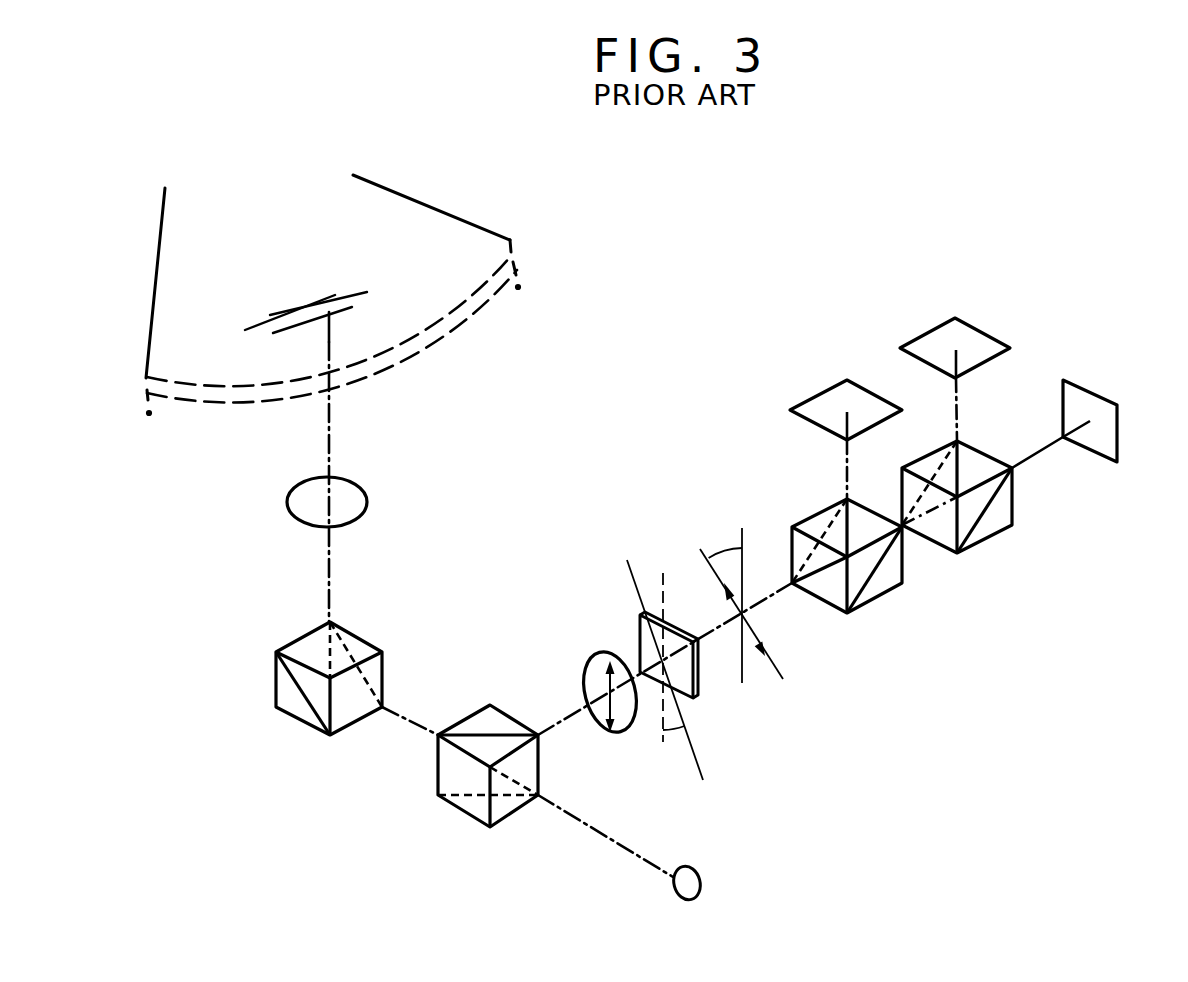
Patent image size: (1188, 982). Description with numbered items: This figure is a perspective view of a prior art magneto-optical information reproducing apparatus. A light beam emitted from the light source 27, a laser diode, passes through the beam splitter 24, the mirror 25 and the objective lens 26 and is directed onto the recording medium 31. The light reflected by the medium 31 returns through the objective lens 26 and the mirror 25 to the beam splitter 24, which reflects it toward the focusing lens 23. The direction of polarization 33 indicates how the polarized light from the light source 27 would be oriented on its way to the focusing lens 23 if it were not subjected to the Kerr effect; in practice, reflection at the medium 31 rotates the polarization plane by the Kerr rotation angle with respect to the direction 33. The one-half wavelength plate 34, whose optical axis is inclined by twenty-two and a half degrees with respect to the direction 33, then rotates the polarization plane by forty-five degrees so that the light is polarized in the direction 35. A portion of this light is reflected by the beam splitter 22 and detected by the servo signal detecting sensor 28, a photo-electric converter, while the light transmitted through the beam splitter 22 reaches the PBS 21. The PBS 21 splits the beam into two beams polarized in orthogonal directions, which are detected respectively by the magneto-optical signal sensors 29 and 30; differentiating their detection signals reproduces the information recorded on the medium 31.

The PBS 21 is at (1012, 518).
The beam splitter 22 is at (800, 520).
The focusing lens 23 is at (586, 674).
The beam splitter 24 is at (438, 773).
The mirror 25 is at (382, 660).
The objective lens 26 is at (367, 502).
The light source 27 is at (702, 877).
The servo signal detecting sensor 28 is at (813, 393).
The magneto-optical signal sensor 29 is at (920, 335).
The magneto-optical signal sensor 30 is at (1113, 403).
The recording medium 31 is at (433, 238).
The direction of polarization 33 is at (600, 724).
The one-half wavelength plate 34 is at (638, 625).
The direction 35 is at (752, 623).